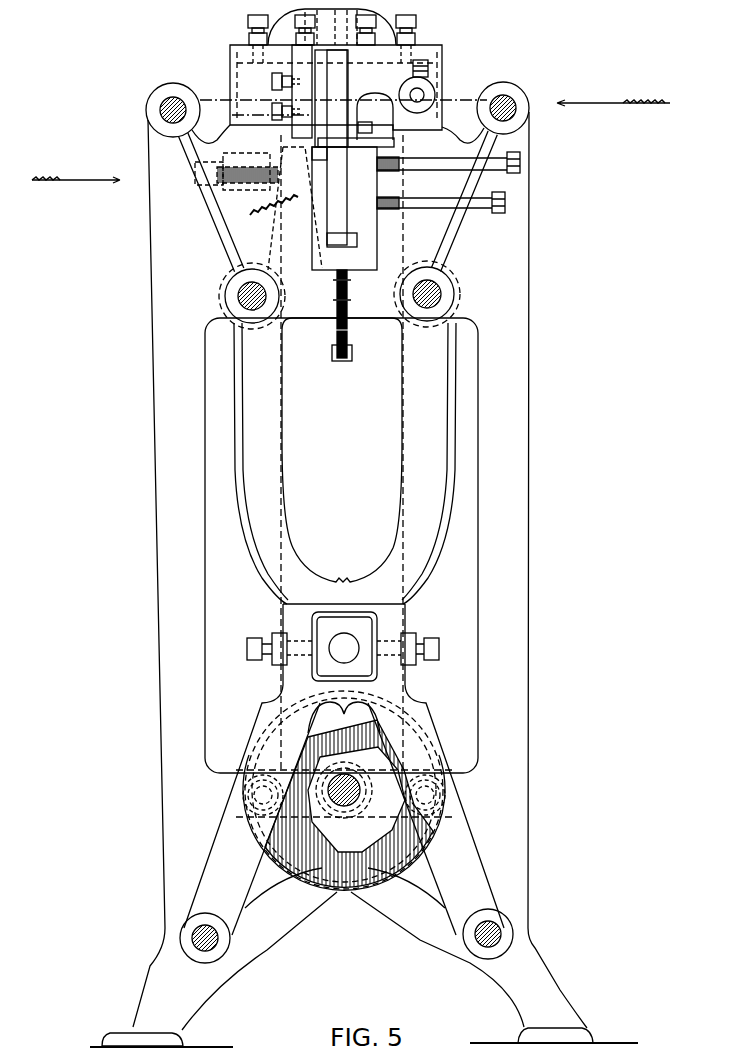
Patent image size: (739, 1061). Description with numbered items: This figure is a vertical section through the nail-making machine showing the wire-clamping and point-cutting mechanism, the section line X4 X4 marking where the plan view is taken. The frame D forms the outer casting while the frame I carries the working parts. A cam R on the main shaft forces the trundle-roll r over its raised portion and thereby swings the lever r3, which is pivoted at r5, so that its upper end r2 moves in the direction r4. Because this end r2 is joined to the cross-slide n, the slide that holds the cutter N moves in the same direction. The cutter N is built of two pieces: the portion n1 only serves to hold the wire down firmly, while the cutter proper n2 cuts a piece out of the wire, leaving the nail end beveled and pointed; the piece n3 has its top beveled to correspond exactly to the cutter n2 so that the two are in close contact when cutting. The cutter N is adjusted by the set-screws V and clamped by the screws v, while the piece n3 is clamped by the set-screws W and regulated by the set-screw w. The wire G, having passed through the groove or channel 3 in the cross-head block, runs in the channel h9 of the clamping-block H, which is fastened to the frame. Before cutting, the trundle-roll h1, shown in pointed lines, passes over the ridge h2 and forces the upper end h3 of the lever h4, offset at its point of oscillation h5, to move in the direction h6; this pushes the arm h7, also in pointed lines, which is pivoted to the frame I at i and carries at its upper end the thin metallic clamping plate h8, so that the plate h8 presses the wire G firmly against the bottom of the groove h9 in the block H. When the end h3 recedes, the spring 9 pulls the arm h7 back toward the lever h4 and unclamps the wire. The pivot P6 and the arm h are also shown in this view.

The frame D is at (498, 500).
The frame I is at (260, 498).
The cam R is at (350, 893).
The cutter N is at (343, 69).
The set-screws V is at (332, 35).
The set-screws v is at (277, 73).
The cross-slide n is at (332, 91).
The cutter piece n1 is at (336, 148).
The cutter proper n2 is at (338, 90).
The piece n3 is at (341, 217).
The wire G is at (344, 208).
The clamping-block H is at (390, 142).
The set-screws W is at (520, 162).
The section line X4 is at (343, 101).
The groove or channel 3 is at (214, 119).
The trundle-roll r is at (432, 798).
The upper end of lever r2 is at (430, 90).
The lever r3 is at (343, 640).
The direction of movement r4 is at (580, 103).
The pivot r5 is at (447, 294).
The pin P6 is at (432, 293).
The arm h is at (280, 887).
The trundle-roll h1 is at (250, 800).
The ridge h2 is at (300, 838).
The upper end of lever h3 is at (262, 188).
The lever h4 is at (260, 595).
The point of oscillation h5 is at (248, 298).
The direction of movement h6 is at (68, 180).
The arm h7 is at (295, 208).
The clamping piece or plate h8 is at (310, 143).
The channel or groove h9 is at (355, 160).
The spring 9 is at (285, 210).
The pivot i is at (332, 310).
The set-screw w is at (352, 358).